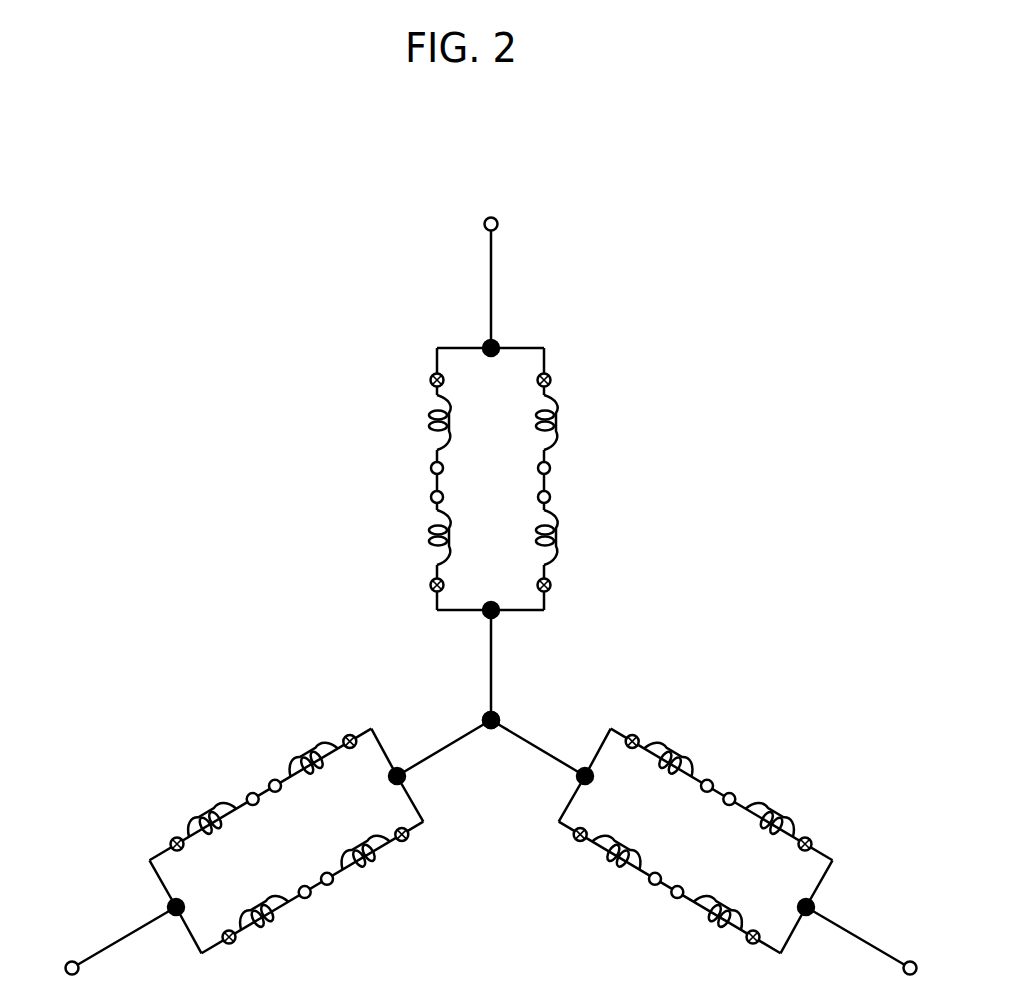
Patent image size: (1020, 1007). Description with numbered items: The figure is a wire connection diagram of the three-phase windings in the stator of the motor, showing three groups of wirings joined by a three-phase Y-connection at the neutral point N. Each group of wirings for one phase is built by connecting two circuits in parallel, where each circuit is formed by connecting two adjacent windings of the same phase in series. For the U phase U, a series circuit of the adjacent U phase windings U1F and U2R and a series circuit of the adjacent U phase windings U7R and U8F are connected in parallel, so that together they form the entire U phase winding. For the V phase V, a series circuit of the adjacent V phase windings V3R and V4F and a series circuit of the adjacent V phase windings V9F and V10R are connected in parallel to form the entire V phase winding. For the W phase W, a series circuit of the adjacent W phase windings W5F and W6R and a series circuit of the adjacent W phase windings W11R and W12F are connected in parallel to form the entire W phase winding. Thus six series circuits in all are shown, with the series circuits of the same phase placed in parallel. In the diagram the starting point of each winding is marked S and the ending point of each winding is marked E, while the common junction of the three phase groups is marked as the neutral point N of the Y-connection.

The U phase U is at (491, 207).
The V phase V is at (70, 949).
The W phase W is at (910, 949).
The neutral point N is at (497, 716).
The starting point of winding S is at (495, 669).
The ending point of winding E is at (494, 693).
The U phase winding U1F is at (415, 422).
The U phase winding U2R is at (413, 537).
The U phase winding U7R is at (573, 537).
The U phase winding U8F is at (572, 422).
The V phase winding V3R is at (373, 866).
The V phase winding V4F is at (275, 924).
The V phase winding V9F is at (208, 812).
The V phase winding V10R is at (301, 749).
The W phase winding W5F is at (784, 814).
The W phase winding W6R is at (679, 750).
The W phase winding W11R is at (597, 867).
The W phase winding W12F is at (703, 929).